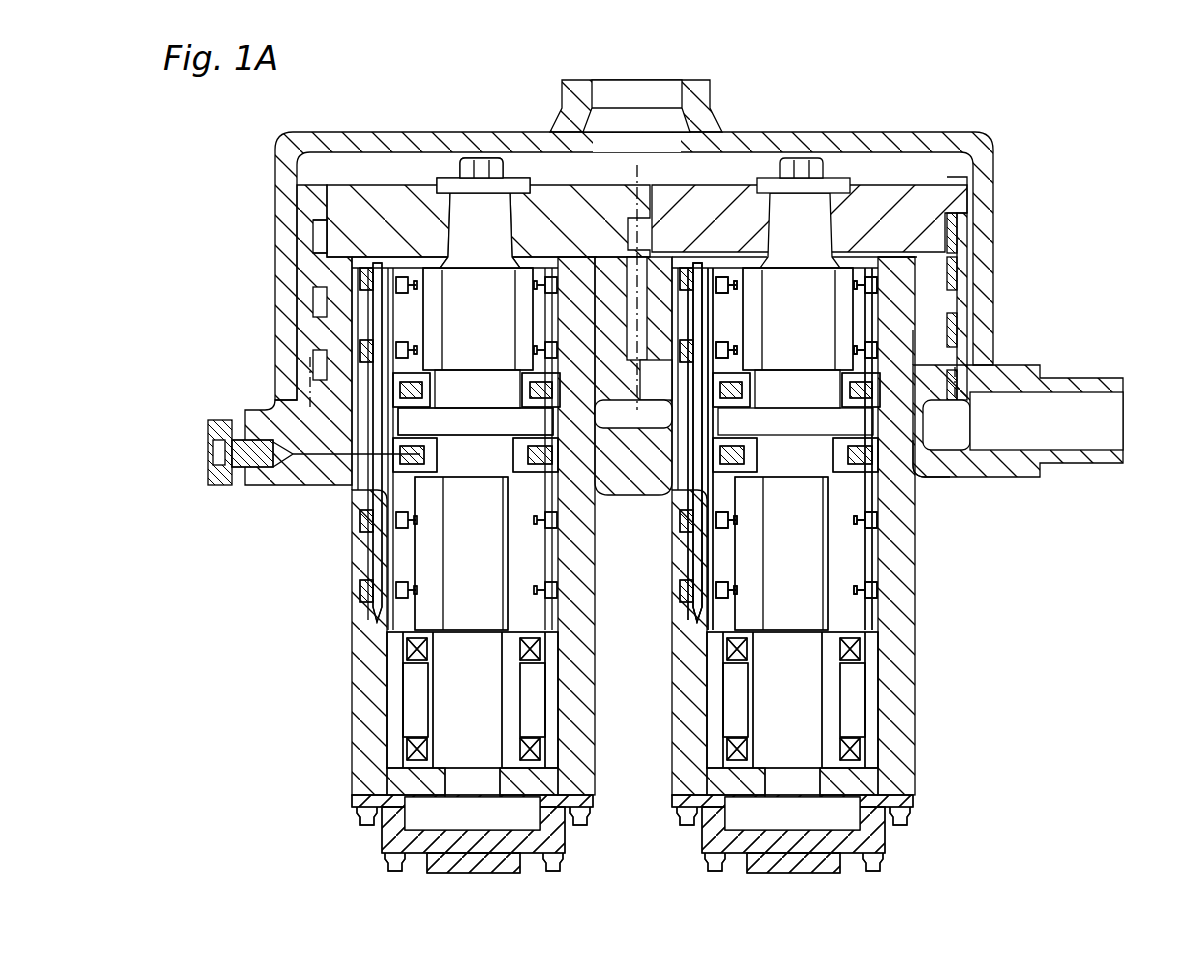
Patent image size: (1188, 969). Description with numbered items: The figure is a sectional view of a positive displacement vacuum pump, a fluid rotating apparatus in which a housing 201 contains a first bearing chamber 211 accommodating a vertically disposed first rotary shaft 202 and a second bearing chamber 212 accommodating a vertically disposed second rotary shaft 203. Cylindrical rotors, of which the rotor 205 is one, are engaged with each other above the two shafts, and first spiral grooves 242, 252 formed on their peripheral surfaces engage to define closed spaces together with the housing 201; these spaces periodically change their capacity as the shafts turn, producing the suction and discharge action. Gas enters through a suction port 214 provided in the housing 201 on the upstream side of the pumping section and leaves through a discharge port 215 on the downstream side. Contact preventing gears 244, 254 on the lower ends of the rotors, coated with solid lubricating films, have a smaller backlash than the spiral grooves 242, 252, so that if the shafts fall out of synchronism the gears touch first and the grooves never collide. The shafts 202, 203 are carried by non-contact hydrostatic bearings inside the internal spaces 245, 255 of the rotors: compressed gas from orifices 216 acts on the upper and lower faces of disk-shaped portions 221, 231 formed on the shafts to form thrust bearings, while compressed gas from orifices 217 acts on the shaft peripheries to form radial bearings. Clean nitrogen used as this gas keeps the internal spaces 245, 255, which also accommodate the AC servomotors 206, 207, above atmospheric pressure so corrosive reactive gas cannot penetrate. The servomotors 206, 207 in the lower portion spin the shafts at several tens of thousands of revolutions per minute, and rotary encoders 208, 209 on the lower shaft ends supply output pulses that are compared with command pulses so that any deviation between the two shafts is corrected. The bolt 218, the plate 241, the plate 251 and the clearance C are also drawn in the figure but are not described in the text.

The housing 201 is at (872, 142).
The first rotary shaft 202 is at (880, 572).
The second rotary shaft 203 is at (486, 562).
The cylindrical rotor 205 is at (423, 186).
The AC servomotor 206 is at (532, 688).
The AC servomotor 207 is at (853, 700).
The rotary encoder 208 is at (515, 815).
The rotary encoder 209 is at (838, 817).
The first bearing chamber 211 is at (873, 535).
The second bearing chamber 212 is at (397, 545).
The suction port 214 is at (660, 95).
The discharge port 215 is at (1060, 402).
The orifice 216 is at (890, 357).
The orifice 217 is at (880, 317).
The bolt 218 is at (213, 457).
The disk-shaped portion 221 is at (960, 478).
The disk-shaped portion 231 is at (397, 425).
The right mounting plate 241 is at (897, 192).
The first spiral groove 242 is at (945, 307).
The contact preventing gear 244 is at (945, 178).
The internal space 245 is at (910, 260).
The left mounting plate 251 is at (388, 197).
The first spiral groove 252 is at (300, 325).
The contact preventing gear 254 is at (273, 398).
The internal space 255 is at (327, 220).
The center clearance C is at (653, 178).